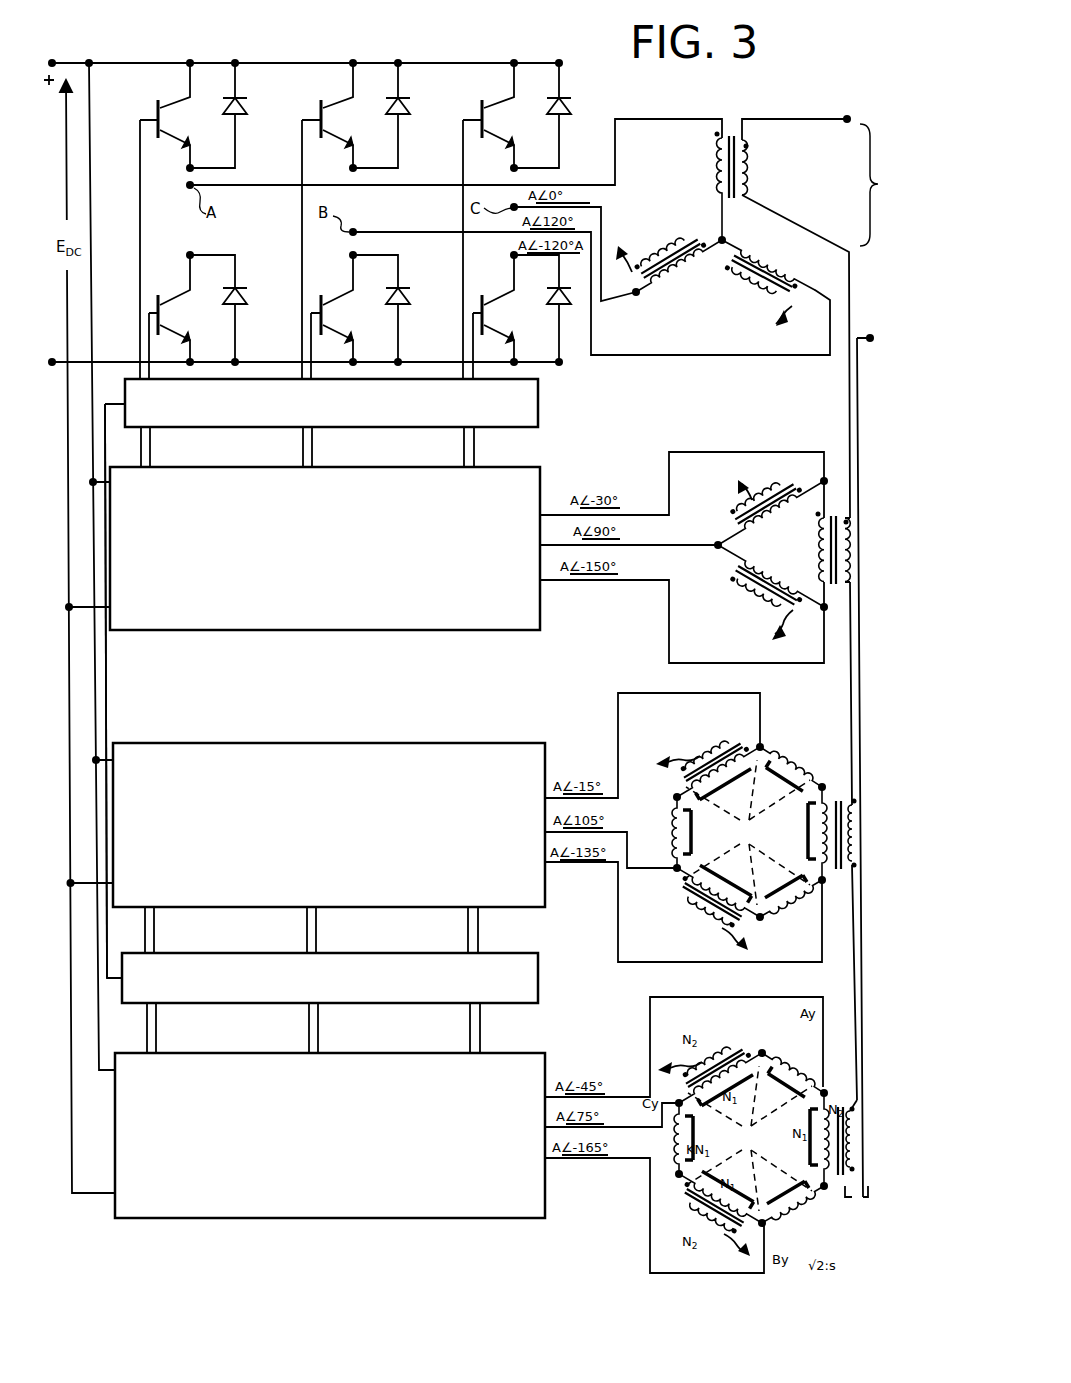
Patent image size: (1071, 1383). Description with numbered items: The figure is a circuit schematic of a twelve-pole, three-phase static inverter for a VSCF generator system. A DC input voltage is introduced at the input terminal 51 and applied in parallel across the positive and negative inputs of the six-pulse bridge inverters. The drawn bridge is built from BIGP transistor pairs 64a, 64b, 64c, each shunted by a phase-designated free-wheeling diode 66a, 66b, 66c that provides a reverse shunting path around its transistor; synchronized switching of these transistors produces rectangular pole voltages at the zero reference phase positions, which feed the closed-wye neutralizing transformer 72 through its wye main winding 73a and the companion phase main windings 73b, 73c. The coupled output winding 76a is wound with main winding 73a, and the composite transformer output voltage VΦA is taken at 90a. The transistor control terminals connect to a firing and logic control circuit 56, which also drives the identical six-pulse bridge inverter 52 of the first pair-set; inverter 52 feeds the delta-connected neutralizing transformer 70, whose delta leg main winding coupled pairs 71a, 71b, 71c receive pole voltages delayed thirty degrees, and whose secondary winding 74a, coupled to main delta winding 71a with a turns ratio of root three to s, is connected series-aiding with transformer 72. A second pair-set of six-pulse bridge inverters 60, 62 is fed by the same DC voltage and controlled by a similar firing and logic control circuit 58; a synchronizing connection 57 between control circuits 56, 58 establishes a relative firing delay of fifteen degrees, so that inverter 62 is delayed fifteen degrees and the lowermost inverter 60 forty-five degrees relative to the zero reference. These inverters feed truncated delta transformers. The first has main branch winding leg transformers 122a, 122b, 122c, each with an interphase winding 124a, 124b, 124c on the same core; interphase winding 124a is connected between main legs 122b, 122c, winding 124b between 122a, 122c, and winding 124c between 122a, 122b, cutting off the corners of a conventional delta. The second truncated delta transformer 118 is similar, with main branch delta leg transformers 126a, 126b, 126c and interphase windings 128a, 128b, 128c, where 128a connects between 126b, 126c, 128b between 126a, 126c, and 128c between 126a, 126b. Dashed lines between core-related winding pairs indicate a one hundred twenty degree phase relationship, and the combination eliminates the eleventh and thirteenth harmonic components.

The input terminal 51 is at (66, 62).
The BIGP transistor pair 64a is at (178, 295).
The BIGP transistor pair 64b is at (322, 112).
The BIGP transistor pair 64c is at (484, 108).
The free-wheeling diode 66a is at (248, 106).
The free-wheeling diode 66b is at (410, 106).
The free-wheeling diode 66c is at (558, 110).
The firing and logic control circuit 56 is at (538, 398).
The six-pulse bridge inverter 52 is at (347, 663).
The synchronizing connection 57 is at (106, 675).
The six-pulse bridge inverter 62 is at (356, 729).
The firing and logic control circuit 58 is at (538, 968).
The six-pulse bridge inverter 60 is at (332, 1249).
The closed-wye neutralizing transformer 72 is at (690, 111).
The wye main winding 73a is at (719, 171).
The primary winding 73b is at (746, 285).
The primary winding 73c is at (682, 260).
The phase coupled output winding 76a is at (752, 173).
The output terminal 90a is at (846, 126).
The delta neutralizing transformer 70 is at (736, 446).
The delta leg main winding 71a is at (818, 539).
The delta leg main winding 71b is at (750, 588).
The delta leg main winding 71c is at (744, 514).
The secondary winding 74a is at (844, 590).
The second truncated delta transformer 118 is at (722, 988).
The main branch winding leg transformer 122a is at (838, 868).
The main branch winding leg transformer 122b is at (746, 914).
The main branch winding leg transformer 122c is at (690, 776).
The interphase winding 124a is at (672, 822).
The interphase winding 124b is at (782, 766).
The interphase winding 124c is at (802, 902).
The main branch winding delta leg transformer 126a is at (844, 1160).
The main branch winding delta leg transformer 126b is at (687, 1219).
The main branch winding delta leg transformer 126c is at (713, 1064).
The interphase winding 128a is at (649, 1148).
The interphase winding 128b is at (790, 1068).
The interphase winding 128c is at (803, 1208).